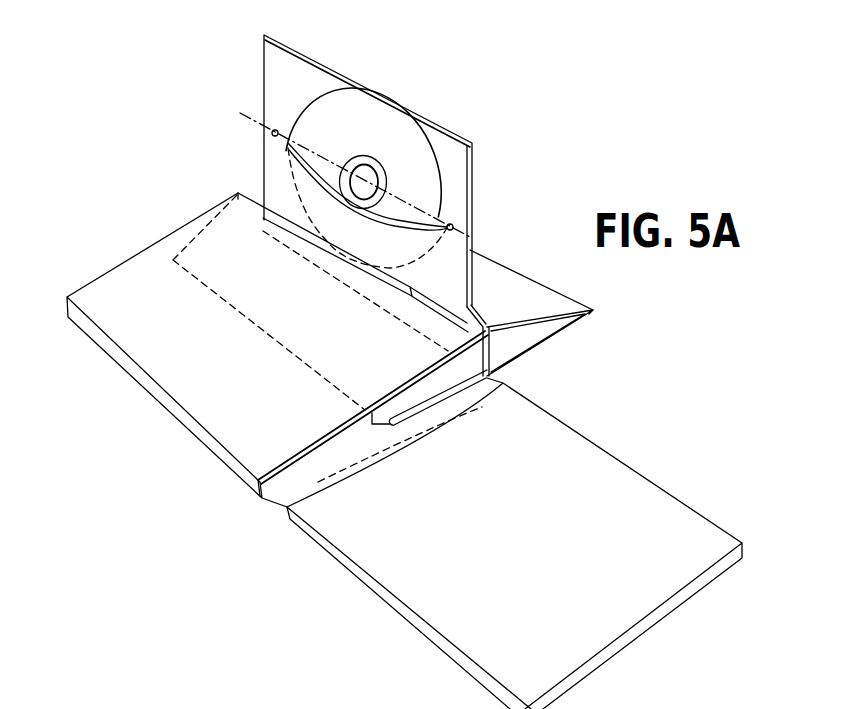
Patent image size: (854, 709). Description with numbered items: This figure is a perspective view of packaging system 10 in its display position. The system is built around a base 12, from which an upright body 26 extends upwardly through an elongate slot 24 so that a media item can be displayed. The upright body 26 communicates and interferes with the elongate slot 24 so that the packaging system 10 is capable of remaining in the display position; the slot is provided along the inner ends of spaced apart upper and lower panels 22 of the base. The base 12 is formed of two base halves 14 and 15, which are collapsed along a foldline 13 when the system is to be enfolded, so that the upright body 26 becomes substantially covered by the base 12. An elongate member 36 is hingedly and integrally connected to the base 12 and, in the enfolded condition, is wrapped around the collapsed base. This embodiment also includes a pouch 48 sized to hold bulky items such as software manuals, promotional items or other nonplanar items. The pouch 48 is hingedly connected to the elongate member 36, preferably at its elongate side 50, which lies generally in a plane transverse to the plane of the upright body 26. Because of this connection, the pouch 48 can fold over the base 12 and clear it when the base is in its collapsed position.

The packaging system 10 is at (535, 68).
The base 12 is at (534, 270).
The foldline 13 is at (483, 364).
The base half 14 is at (520, 302).
The base half 15 is at (395, 401).
The upper and lower panels 22 is at (481, 326).
The elongate slot 24 is at (412, 290).
The upright body 26 is at (263, 100).
The elongate member 36 is at (104, 268).
The pouch 48 is at (660, 478).
The elongate side 50 is at (294, 500).